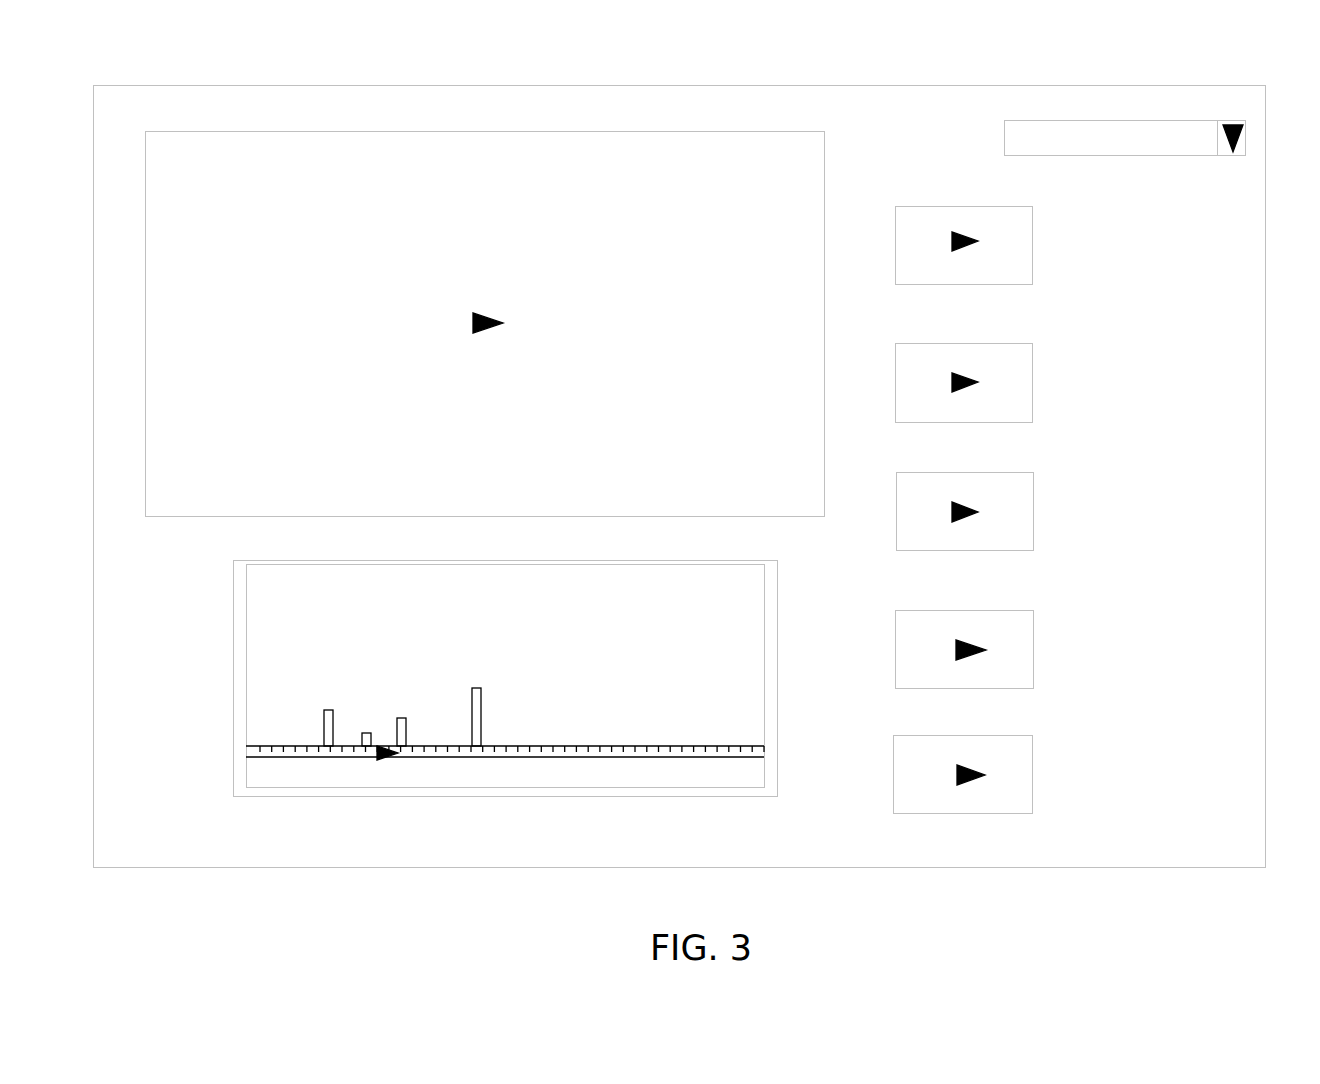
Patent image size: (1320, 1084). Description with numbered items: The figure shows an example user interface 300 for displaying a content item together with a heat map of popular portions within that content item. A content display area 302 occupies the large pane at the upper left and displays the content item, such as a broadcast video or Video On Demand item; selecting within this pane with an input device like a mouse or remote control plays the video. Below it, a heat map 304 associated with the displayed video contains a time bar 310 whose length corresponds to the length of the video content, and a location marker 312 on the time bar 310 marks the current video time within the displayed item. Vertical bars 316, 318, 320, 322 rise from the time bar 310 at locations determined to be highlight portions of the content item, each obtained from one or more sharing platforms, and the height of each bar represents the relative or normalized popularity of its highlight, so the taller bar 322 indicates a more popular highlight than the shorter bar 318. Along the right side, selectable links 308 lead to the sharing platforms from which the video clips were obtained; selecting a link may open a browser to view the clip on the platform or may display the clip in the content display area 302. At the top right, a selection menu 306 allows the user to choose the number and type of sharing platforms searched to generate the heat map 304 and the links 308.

The user interface 300 is at (248, 103).
The content display area 302 is at (815, 172).
The heat map 304 is at (747, 602).
The selection menu 306 is at (1195, 125).
The links 308 is at (1231, 480).
The time bar 310 is at (282, 750).
The location marker 312 is at (390, 757).
The vertical bar 316 is at (324, 713).
The vertical bar 318 is at (372, 740).
The vertical bar 320 is at (398, 720).
The vertical bar 322 is at (482, 695).